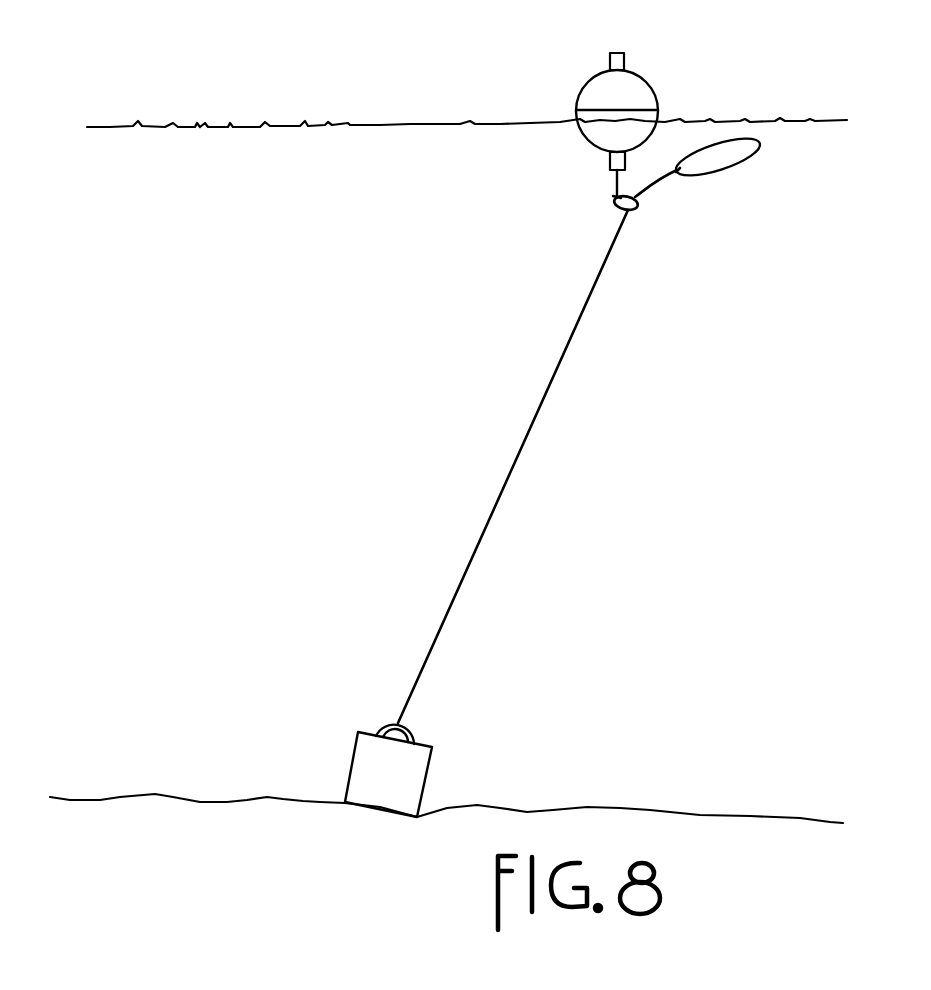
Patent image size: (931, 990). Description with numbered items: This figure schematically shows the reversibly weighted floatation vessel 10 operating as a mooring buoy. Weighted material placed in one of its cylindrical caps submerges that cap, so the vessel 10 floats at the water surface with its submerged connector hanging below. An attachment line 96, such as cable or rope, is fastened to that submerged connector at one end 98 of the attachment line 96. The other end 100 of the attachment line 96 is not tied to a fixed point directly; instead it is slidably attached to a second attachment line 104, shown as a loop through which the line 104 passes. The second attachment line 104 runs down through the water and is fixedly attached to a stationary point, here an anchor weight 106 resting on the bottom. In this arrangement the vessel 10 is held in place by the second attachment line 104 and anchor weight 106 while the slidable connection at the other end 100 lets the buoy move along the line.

The reversibly weighted floatation vessel 10 is at (560, 71).
The attachment line 96 is at (602, 198).
The one end of the attachment line 98 is at (614, 183).
The other end of the attachment line 100 is at (620, 209).
The second attachment line 104 is at (505, 467).
The anchor weight 106 is at (410, 766).